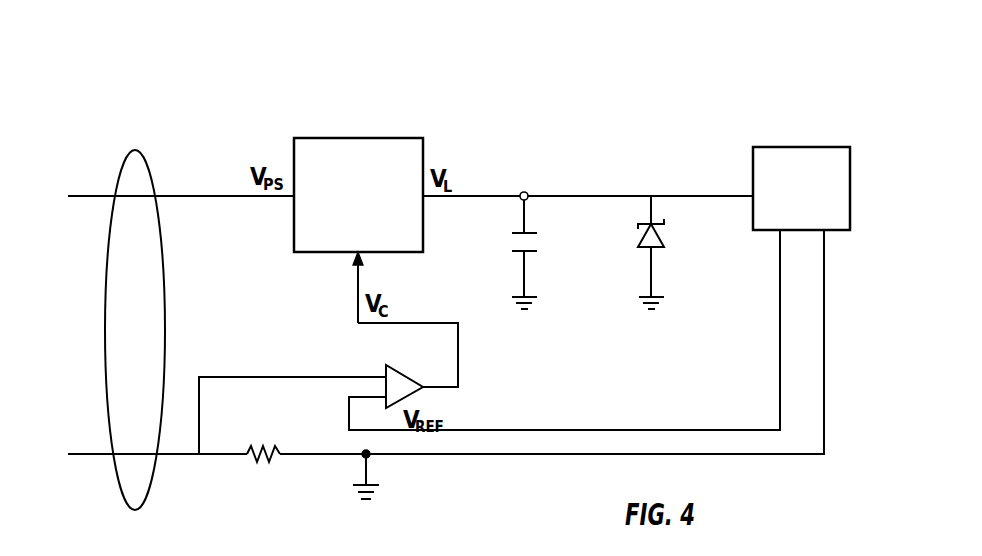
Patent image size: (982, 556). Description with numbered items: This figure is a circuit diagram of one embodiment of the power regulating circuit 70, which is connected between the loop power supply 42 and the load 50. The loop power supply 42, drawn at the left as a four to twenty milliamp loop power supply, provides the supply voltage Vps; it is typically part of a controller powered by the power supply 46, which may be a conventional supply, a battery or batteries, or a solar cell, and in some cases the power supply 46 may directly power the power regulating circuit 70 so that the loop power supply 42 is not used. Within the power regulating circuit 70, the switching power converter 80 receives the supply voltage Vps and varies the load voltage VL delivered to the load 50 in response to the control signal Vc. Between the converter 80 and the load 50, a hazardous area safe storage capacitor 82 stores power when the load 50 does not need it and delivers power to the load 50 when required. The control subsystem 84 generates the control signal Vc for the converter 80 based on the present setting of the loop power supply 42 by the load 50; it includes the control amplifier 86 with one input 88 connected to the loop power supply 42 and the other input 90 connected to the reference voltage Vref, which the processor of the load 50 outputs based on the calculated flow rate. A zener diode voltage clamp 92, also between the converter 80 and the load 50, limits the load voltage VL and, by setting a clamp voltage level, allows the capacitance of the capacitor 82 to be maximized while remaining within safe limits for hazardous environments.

The loop power supply 42 is at (149, 264).
The power supply 46 is at (122, 167).
The load 50 is at (790, 147).
The power regulating circuit 70 is at (425, 67).
The power converter 80 is at (357, 138).
The capacitor 82 is at (537, 242).
The control subsystem 84 is at (355, 352).
The control amplifier 86 is at (412, 384).
The input 88 is at (385, 377).
The input 90 is at (382, 398).
The zener diode voltage clamp 92 is at (665, 243).